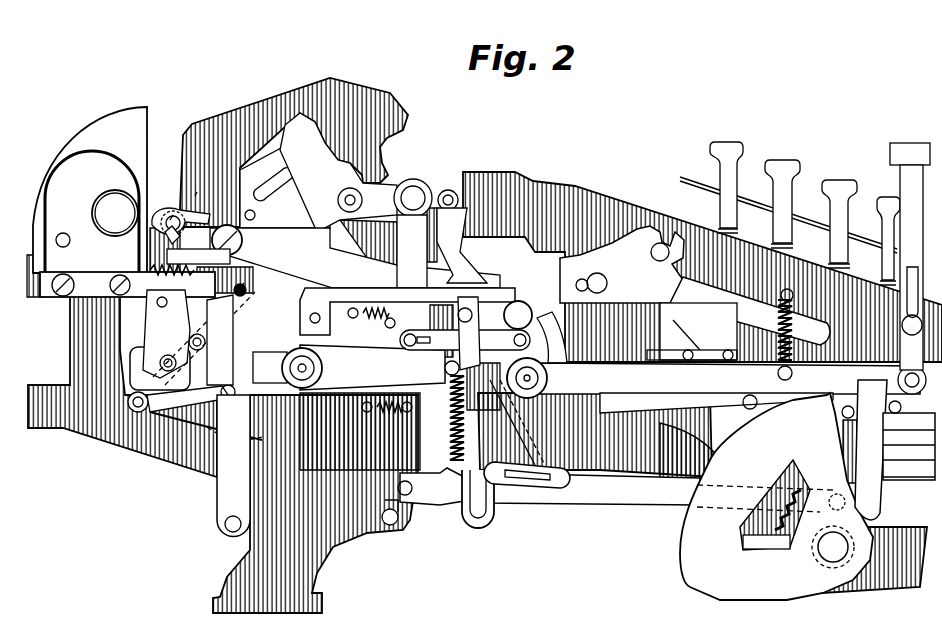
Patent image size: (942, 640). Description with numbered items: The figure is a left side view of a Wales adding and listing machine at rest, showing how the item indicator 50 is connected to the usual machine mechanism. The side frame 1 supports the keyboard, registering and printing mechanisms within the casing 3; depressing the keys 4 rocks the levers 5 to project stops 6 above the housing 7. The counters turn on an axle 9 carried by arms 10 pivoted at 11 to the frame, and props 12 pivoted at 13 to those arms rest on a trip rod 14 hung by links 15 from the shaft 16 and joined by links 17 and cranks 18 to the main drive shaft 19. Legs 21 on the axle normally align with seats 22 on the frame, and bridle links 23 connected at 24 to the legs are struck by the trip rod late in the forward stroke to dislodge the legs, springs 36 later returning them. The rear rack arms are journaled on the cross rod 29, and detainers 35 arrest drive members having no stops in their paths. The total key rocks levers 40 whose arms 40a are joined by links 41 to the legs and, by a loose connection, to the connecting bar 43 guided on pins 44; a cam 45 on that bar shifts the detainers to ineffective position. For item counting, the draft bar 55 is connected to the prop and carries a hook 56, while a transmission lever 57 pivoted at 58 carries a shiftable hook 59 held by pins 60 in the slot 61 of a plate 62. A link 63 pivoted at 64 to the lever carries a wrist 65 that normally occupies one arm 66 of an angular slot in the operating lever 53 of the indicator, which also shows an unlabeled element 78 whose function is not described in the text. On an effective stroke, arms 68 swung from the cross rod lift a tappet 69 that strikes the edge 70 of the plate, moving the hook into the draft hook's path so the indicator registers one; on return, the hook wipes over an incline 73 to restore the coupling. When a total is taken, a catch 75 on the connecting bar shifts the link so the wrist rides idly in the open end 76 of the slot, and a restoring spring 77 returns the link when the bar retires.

The side frame 1 is at (570, 196).
The casing 3 is at (462, 378).
The keys 4 is at (795, 165).
The levers 5 is at (689, 377).
The stops 6 is at (643, 287).
The housing 7 is at (675, 338).
The axle 9 is at (418, 185).
The arms 10 is at (362, 200).
The pivot 11 is at (355, 200).
The props 12 is at (462, 245).
The pivot 13 is at (450, 189).
The trip rod 14 is at (492, 498).
The links 15 is at (540, 490).
The shaft 16 is at (540, 378).
The links 17 is at (670, 449).
The cranks 18 is at (805, 545).
The main drive shaft 19 is at (833, 548).
The legs 21 is at (412, 251).
The seats 22 is at (392, 527).
The bridle links 23 is at (455, 502).
The connection 24 is at (405, 481).
The cross rod 29 is at (302, 360).
The detainers 35 is at (920, 215).
The springs 36 is at (383, 400).
The levers 40 is at (766, 379).
The arms 40a is at (532, 305).
The links 41 is at (465, 340).
The connecting bar 43 is at (407, 302).
The pins 44 is at (243, 242).
The cam 45 is at (672, 236).
The item indicator 50 is at (124, 202).
The operating lever 53 is at (172, 220).
The draft bar 55 is at (349, 367).
The hook 56 is at (212, 395).
The transmission lever 57 is at (202, 332).
The pivot 58 is at (248, 290).
The hook 59 is at (252, 400).
The pins 60 is at (148, 405).
The slot 61 is at (150, 345).
The plate 62 is at (137, 360).
The link 63 is at (168, 240).
The pivot 64 is at (158, 303).
The wrist 65 is at (173, 215).
The arm of angular slot 66 is at (197, 192).
The arms 68 is at (215, 430).
The tappet 69 is at (130, 395).
The edge 70 is at (140, 413).
The incline 73 is at (210, 395).
The catch 75 is at (198, 257).
The open end 76 is at (285, 184).
The restoring spring 77 is at (167, 272).
The dial 78 is at (115, 213).